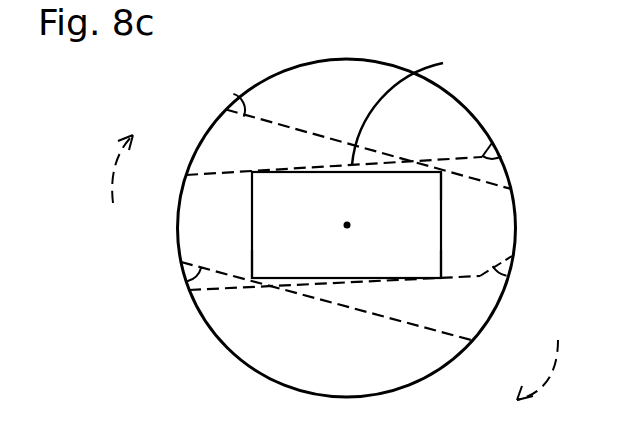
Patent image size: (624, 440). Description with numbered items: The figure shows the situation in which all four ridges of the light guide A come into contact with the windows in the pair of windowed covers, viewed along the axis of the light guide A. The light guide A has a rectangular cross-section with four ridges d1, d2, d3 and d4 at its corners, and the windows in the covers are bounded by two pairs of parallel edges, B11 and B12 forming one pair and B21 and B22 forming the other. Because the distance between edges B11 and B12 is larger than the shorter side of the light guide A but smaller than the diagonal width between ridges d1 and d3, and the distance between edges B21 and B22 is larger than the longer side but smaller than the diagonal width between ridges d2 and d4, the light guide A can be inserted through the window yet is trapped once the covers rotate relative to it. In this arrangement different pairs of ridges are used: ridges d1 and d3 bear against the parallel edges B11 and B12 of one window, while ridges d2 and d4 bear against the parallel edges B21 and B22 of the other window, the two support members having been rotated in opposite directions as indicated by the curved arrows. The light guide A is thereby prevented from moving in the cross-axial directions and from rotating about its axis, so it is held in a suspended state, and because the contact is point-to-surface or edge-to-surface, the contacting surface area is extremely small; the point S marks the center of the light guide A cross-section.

The parallel edge of window B11 is at (492, 143).
The parallel edge of window B12 is at (512, 256).
The parallel edge of window B21 is at (226, 98).
The parallel edge of window B22 is at (189, 290).
The light guide A is at (406, 105).
The beam spot S is at (347, 225).
The ridge of light guide d1 is at (346, 225).
The ridge of light guide d2 is at (271, 265).
The ridge of light guide d3 is at (420, 265).
The ridge of light guide d4 is at (420, 188).